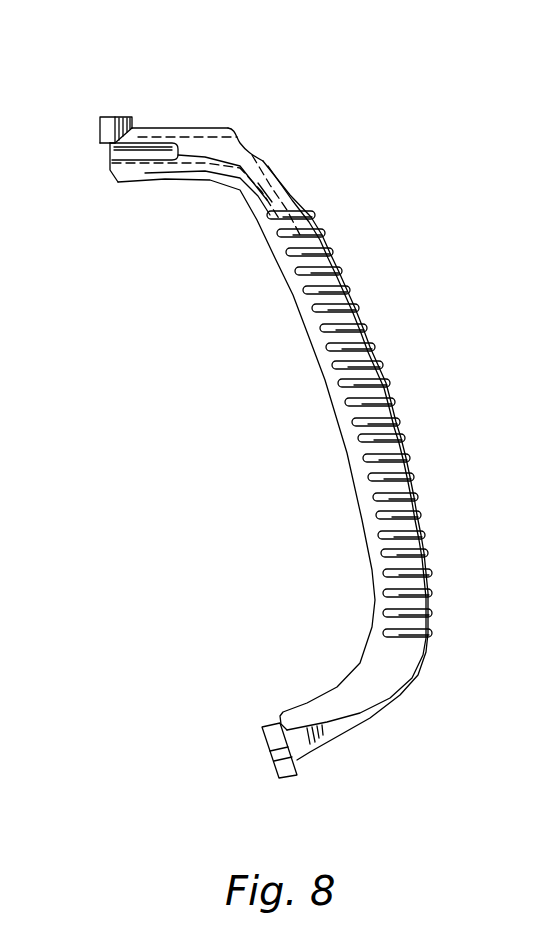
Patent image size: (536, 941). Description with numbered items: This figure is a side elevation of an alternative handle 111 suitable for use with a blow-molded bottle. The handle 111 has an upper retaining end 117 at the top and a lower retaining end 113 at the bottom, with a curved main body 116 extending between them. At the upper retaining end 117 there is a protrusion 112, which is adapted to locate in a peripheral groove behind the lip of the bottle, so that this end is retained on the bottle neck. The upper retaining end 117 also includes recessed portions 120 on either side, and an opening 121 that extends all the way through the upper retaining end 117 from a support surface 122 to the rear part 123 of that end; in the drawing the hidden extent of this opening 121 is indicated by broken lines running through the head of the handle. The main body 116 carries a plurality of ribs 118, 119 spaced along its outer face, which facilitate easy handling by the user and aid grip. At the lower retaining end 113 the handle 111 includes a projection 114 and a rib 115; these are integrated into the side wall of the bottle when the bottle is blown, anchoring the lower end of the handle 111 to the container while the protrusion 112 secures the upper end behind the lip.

The handle 111 is at (360, 293).
The protrusion 112 is at (118, 140).
The lower retaining end 113 is at (305, 767).
The projection 114 is at (280, 775).
The rib 115 is at (327, 743).
The main body 116 is at (343, 412).
The upper retaining end 117 is at (237, 123).
The rib 118 is at (395, 402).
The rib 119 is at (403, 437).
The recessed portion 120 is at (145, 153).
The opening 121 is at (195, 136).
The support surface 122 is at (104, 166).
The rear part 123 is at (258, 149).